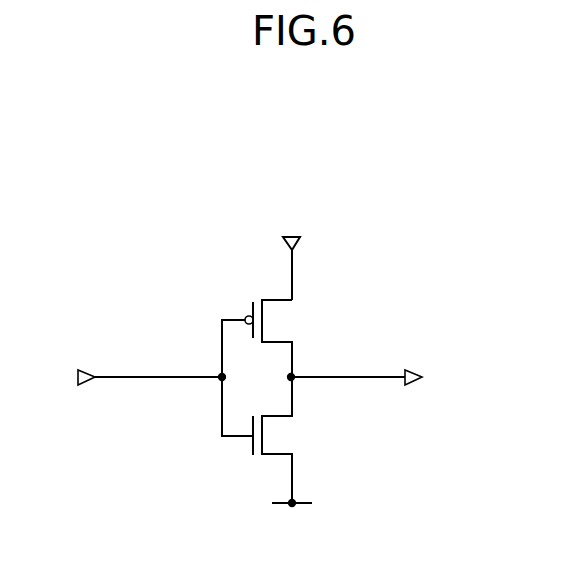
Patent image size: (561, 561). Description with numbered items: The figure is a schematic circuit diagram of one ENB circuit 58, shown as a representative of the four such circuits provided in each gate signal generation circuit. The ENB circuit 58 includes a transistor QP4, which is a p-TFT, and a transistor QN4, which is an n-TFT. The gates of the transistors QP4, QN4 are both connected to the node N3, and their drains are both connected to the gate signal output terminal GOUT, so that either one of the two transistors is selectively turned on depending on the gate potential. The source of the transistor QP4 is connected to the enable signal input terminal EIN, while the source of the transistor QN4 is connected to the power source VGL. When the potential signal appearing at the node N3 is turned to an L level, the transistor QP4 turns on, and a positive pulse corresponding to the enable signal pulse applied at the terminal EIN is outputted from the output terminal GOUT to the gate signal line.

The ENB circuit 58 is at (437, 223).
The transistor QP4 is at (272, 338).
The transistor QN4 is at (272, 440).
The enable signal input terminal EIN is at (291, 256).
The gate signal output terminal GOUT is at (387, 378).
The node N3 is at (138, 376).
The power source VGL is at (289, 518).